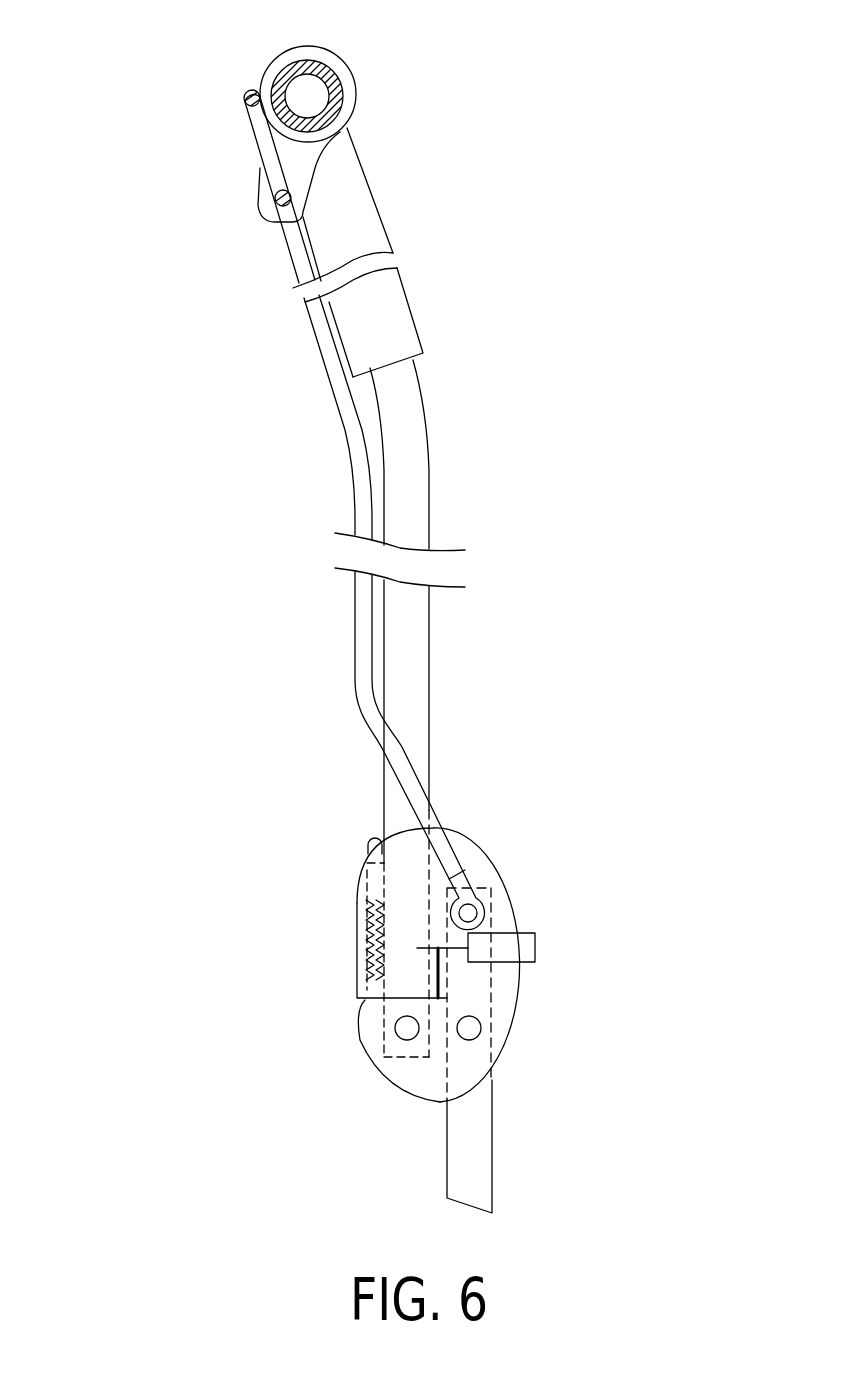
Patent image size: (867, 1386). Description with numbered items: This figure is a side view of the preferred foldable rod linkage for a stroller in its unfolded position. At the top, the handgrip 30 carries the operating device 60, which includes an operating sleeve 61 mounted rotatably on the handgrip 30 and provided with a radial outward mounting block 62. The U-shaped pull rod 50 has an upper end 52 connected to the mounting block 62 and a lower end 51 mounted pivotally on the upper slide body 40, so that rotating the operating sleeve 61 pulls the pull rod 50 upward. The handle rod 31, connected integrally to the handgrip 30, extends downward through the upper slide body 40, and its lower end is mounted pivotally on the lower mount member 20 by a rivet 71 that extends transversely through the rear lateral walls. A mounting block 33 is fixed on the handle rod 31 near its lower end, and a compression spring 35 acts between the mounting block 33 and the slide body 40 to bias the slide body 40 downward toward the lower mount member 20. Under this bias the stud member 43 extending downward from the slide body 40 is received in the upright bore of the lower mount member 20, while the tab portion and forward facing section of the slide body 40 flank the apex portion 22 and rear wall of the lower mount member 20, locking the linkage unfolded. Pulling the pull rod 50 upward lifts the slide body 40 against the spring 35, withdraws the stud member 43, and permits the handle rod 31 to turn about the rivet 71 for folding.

The operating device 60 is at (388, 111).
The operating sleeve 61 is at (345, 73).
The mounting block 62 is at (308, 172).
The handgrip 30 is at (335, 102).
The handle rod 31 is at (393, 668).
The pull rod 50 is at (280, 506).
The lower end 51 is at (337, 377).
The upper end 52 is at (278, 194).
The upper slide body 40 is at (493, 852).
The mounting block 33 is at (372, 840).
The compression spring 35 is at (373, 935).
The apex portion 22 is at (473, 948).
The lower mount member 20 is at (425, 1048).
The rivet 71 is at (400, 1030).
The stud member 43 is at (468, 972).